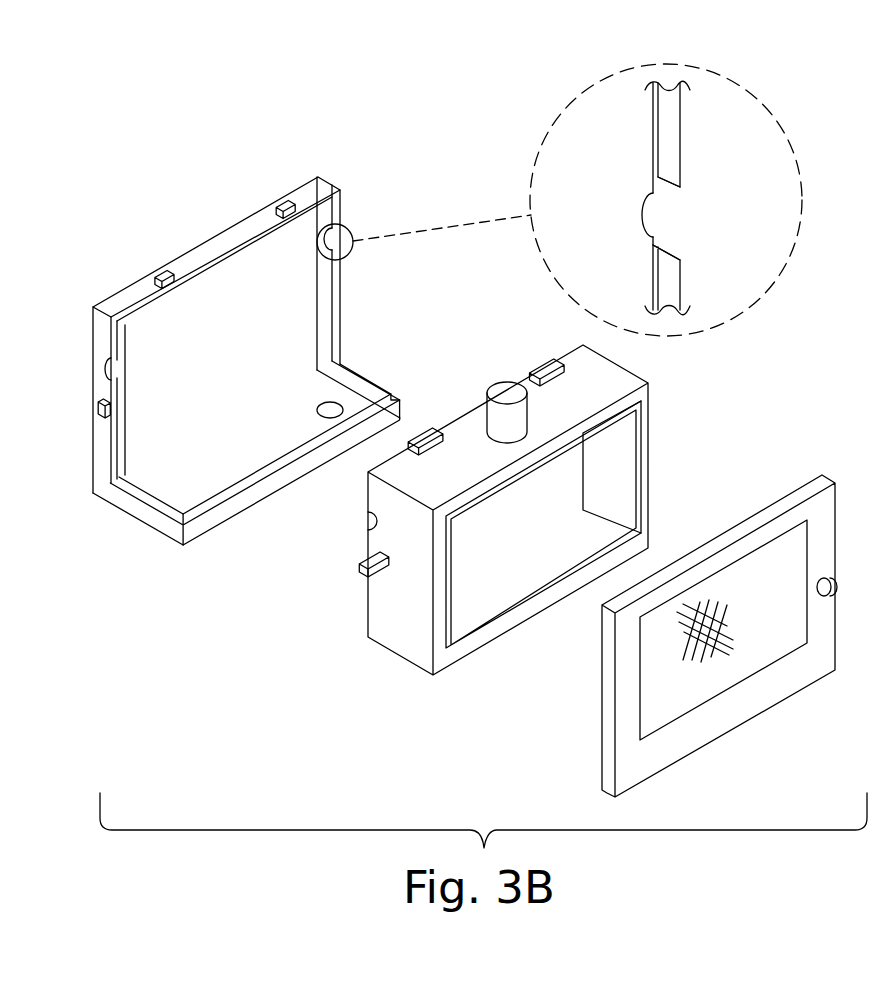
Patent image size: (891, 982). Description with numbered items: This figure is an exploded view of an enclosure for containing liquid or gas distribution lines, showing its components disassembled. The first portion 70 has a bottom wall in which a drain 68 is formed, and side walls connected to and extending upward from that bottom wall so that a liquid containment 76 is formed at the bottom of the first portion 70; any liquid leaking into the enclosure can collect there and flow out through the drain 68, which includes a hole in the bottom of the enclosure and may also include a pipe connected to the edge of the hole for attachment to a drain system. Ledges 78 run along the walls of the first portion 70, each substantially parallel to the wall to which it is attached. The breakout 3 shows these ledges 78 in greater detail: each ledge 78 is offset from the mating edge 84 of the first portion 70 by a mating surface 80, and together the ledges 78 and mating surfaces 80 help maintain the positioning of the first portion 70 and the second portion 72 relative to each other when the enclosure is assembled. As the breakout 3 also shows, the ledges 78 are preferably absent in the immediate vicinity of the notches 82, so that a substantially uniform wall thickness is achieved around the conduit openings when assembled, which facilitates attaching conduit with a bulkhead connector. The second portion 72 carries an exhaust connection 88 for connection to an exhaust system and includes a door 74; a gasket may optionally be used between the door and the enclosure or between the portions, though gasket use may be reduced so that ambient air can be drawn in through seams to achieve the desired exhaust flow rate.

The breakout 3 is at (786, 138).
The drain 68 is at (330, 410).
The first portion 70 is at (445, 304).
The second portion 72 is at (483, 495).
The door 74 is at (693, 740).
The liquid containment 76 is at (263, 451).
The ledges 78 is at (357, 372).
The mating surface 80 is at (662, 182).
The notches 82 is at (643, 214).
The mating edge 84 is at (655, 245).
The exhaust connection 88 is at (512, 391).